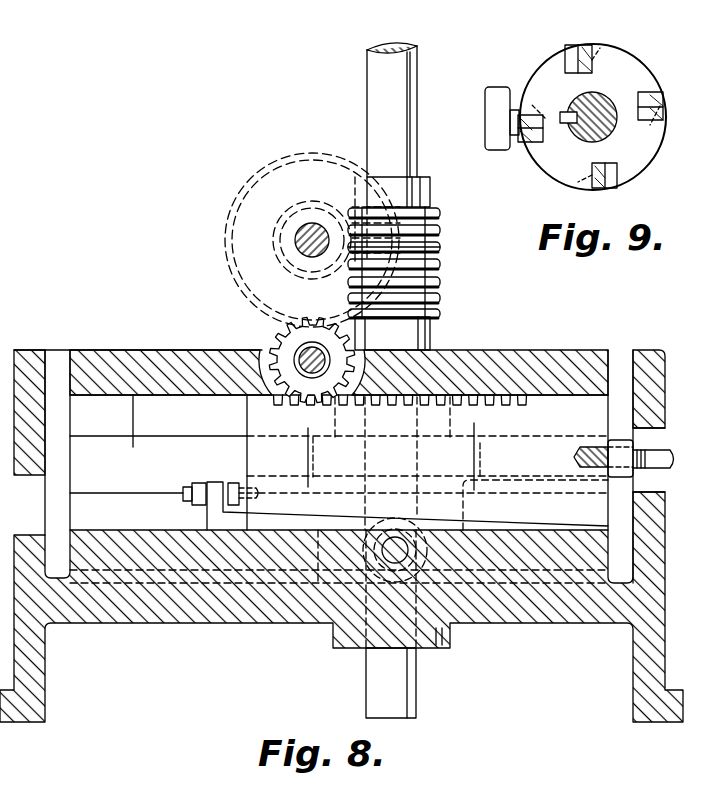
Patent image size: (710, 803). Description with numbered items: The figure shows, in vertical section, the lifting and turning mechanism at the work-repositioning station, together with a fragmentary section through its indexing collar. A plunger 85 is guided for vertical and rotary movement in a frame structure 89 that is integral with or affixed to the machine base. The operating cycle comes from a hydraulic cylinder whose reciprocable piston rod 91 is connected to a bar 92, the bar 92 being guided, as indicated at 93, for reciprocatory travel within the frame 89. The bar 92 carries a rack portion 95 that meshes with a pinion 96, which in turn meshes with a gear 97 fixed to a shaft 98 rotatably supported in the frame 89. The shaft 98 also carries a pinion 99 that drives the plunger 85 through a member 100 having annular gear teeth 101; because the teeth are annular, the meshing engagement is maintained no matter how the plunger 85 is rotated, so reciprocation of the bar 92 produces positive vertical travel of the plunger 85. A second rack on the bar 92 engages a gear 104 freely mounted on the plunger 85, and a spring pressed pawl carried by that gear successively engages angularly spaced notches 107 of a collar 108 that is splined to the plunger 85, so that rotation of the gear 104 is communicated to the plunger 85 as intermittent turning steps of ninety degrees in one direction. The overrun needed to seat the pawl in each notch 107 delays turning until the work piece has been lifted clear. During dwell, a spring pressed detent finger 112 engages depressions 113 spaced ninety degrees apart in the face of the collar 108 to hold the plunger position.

In FIG. 8, the plunger 85 is at (373, 89).
In FIG. 9, the plunger 85 is at (600, 102).
In FIG. 8, the frame structure 89 is at (193, 615).
In FIG. 8, the piston rod 91 is at (662, 453).
In FIG. 8, the bar 92 is at (255, 458).
In FIG. 8, the guide 93 is at (127, 530).
In FIG. 8, the rack portion 95 is at (470, 397).
In FIG. 8, the pinion 96 is at (283, 340).
In FIG. 8, the gear 97 is at (265, 167).
In FIG. 8, the shaft 98 is at (307, 237).
In FIG. 8, the pinion 99 is at (280, 217).
In FIG. 8, the member 100 is at (433, 223).
In FIG. 8, the annular gear teeth 101 is at (440, 249).
In FIG. 8, the gear 104 is at (483, 455).
In FIG. 9, the notches 107 is at (567, 55).
In FIG. 9, the collar 108 is at (643, 168).
In FIG. 9, the detent finger 112 is at (518, 107).
In FIG. 9, the depressions 113 is at (602, 48).